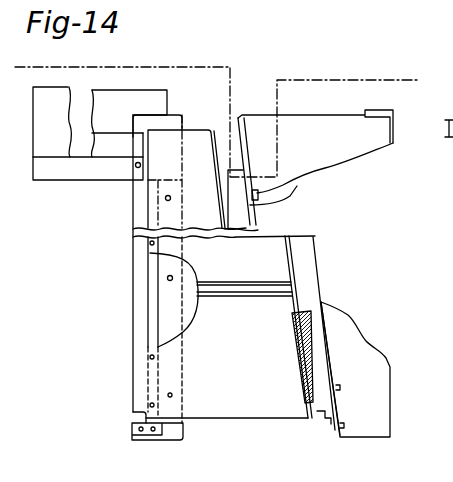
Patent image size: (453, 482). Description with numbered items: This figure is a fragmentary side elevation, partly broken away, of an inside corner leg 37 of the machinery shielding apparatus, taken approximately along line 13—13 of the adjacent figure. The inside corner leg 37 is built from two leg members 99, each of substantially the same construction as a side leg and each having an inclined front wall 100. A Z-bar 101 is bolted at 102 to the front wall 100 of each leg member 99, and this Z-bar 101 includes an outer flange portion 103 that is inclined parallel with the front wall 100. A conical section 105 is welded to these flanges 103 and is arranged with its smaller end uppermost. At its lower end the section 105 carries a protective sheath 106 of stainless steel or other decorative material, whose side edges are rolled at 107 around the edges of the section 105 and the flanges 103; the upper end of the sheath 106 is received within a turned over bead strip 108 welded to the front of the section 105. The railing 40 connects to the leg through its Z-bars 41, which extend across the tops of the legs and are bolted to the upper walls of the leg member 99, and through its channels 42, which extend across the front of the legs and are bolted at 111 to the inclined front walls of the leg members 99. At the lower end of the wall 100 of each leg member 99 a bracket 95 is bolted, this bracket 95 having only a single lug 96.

The line 13— 13 is at (15, 100).
The inside corner leg 37 is at (108, 310).
The railing 40 is at (35, 190).
The Z-bar 41 is at (162, 101).
The channel 42 is at (70, 170).
The bracket 95 is at (333, 432).
The lug 96 is at (132, 415).
The leg member 99 is at (375, 392).
The inclined front wall 100 is at (290, 198).
The Z-bar 101 is at (163, 265).
The bolt 102 is at (167, 278).
The outer flange portion 103 is at (152, 342).
The conical section 105 is at (265, 247).
The protective sheath 106 is at (235, 405).
The rolled side edges 107 is at (300, 350).
The turned over bead strip 108 is at (275, 285).
The bolt 111 is at (138, 167).